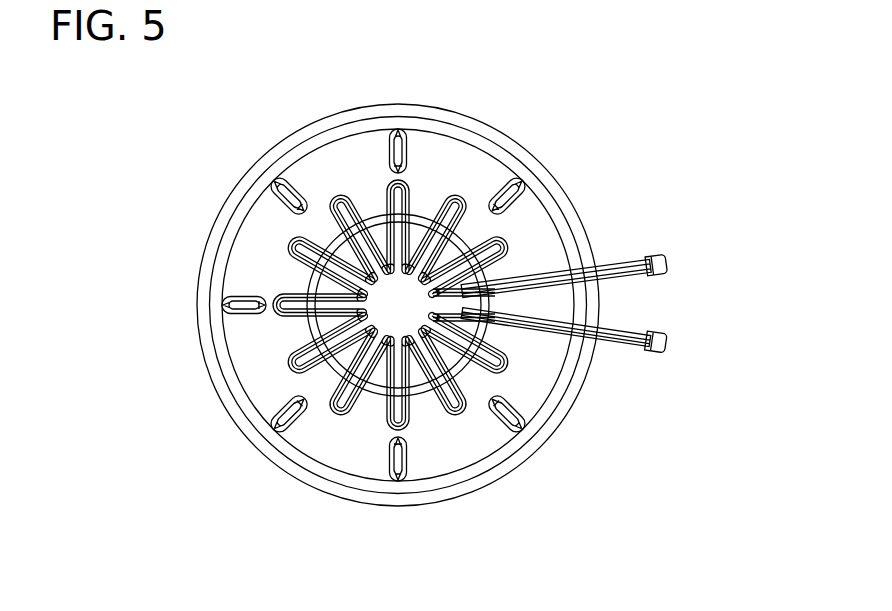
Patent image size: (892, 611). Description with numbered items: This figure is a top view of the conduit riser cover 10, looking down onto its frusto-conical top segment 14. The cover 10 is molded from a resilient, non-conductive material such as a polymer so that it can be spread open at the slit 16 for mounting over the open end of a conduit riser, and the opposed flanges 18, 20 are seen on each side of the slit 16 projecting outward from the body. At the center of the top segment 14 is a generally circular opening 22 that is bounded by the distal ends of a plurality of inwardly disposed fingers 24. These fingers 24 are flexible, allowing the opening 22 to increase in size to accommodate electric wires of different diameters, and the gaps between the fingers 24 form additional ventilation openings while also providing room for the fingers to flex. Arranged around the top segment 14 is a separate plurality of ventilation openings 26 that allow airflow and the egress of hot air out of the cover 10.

The conduit riser cover 10 is at (454, 286).
The frusto-conical top segment 14 is at (486, 167).
The slit 16 is at (609, 311).
The flange 18 is at (622, 258).
The flange 20 is at (622, 306).
The opening 22 is at (399, 321).
The fingers 24 is at (343, 253).
The ventilation openings 26 is at (290, 197).